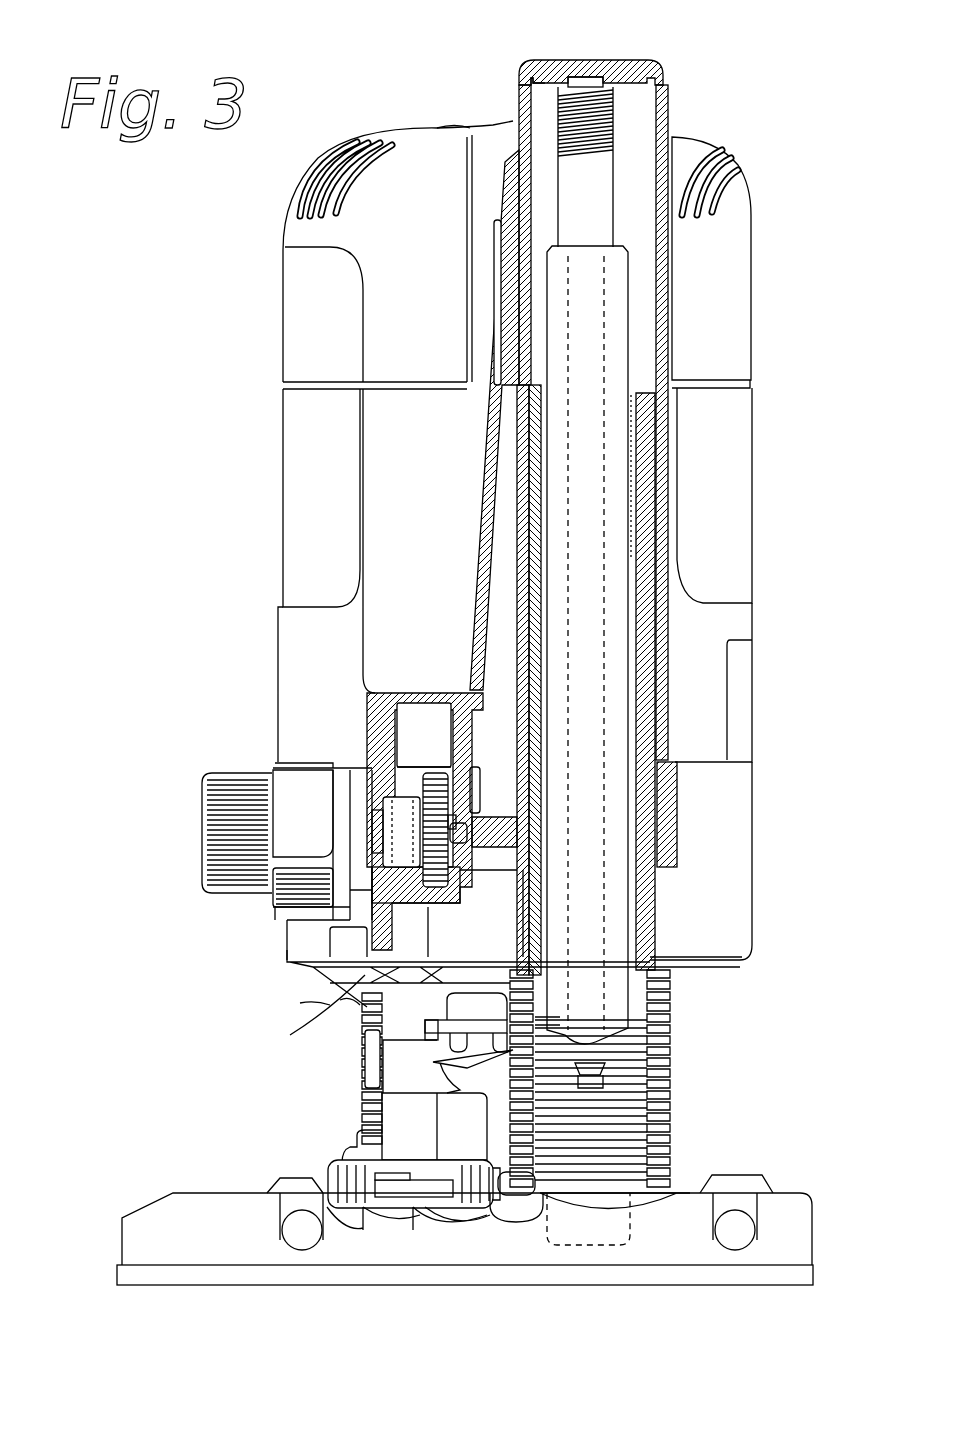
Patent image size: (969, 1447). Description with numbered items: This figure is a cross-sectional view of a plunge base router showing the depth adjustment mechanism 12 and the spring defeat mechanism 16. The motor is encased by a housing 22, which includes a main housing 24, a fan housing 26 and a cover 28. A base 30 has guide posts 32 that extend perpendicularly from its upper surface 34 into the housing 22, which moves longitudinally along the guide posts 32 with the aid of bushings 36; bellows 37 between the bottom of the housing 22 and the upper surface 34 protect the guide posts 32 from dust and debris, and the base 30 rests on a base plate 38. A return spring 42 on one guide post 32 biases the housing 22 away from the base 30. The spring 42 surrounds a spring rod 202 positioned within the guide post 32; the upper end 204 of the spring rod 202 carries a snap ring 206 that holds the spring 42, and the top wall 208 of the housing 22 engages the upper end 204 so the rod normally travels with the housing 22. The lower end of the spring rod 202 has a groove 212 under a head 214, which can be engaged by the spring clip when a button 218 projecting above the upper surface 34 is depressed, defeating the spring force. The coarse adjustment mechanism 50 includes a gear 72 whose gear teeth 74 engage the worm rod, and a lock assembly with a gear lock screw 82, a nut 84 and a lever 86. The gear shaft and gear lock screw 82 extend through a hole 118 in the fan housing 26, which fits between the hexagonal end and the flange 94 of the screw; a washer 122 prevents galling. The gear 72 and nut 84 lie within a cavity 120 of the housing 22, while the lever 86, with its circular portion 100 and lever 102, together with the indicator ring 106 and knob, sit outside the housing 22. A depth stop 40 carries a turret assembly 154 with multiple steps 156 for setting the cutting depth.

The depth adjustment mechanism 12 is at (152, 745).
The spring defeat mechanism 16 is at (488, 1222).
The housing 22 is at (300, 422).
The main housing 24 is at (300, 552).
The fan housing 26 is at (365, 700).
The cover 28 is at (345, 142).
The base 30 is at (797, 1228).
The guide posts 32 is at (620, 318).
The upper surface 34 is at (693, 1192).
The bushings 36 is at (640, 433).
The bellows 37 is at (675, 1040).
The base plate 38 is at (637, 1286).
The depth stop 40 is at (342, 1182).
The return spring 42 is at (610, 98).
The coarse adjustment mechanism 50 is at (200, 828).
The gear 72 is at (436, 773).
The gear teeth 74 is at (455, 750).
The gear lock screw 82 is at (371, 727).
The nut 84 is at (397, 760).
The lever 86 is at (280, 765).
The flange 94 is at (392, 850).
The circular portion 100 is at (343, 777).
The lever 102 is at (275, 908).
The indicator ring 106 is at (284, 833).
The hole 118 is at (337, 840).
The cavity 120 is at (403, 835).
The washer 122 is at (400, 948).
The turret assembly 154 is at (400, 1123).
The steps 156 is at (347, 1157).
The spring rod 202 is at (597, 274).
The upper end 204 is at (604, 72).
The snap ring 206 is at (576, 78).
The top wall 208 is at (548, 62).
The groove 212 is at (640, 1070).
The head 214 is at (605, 1085).
The button 218 is at (517, 1225).